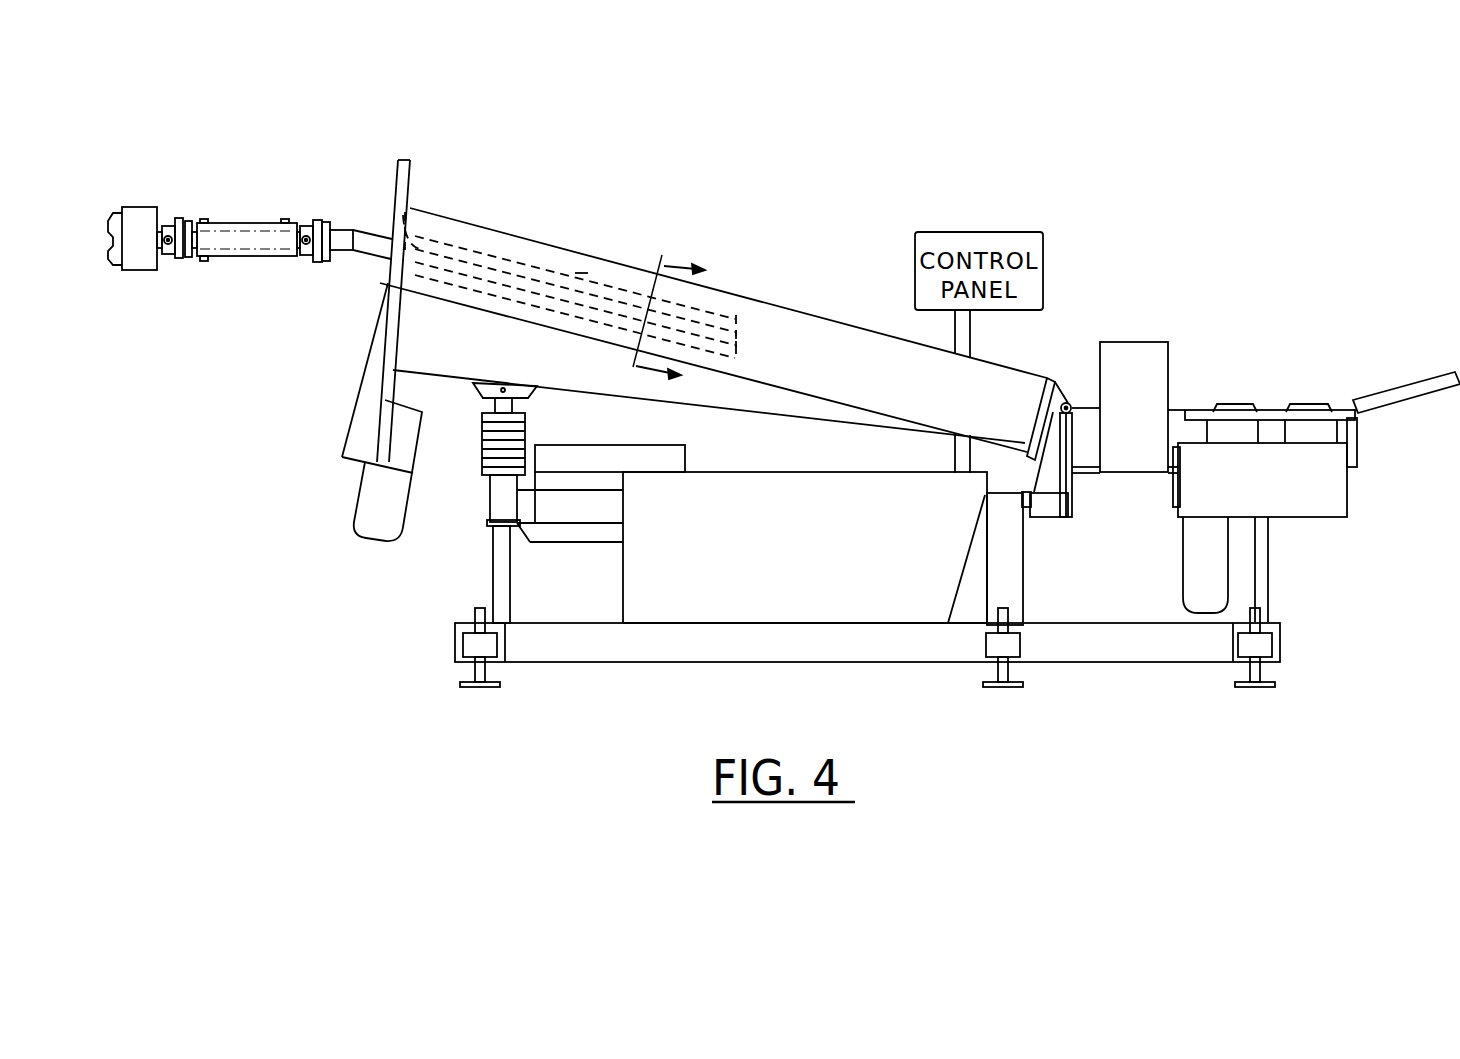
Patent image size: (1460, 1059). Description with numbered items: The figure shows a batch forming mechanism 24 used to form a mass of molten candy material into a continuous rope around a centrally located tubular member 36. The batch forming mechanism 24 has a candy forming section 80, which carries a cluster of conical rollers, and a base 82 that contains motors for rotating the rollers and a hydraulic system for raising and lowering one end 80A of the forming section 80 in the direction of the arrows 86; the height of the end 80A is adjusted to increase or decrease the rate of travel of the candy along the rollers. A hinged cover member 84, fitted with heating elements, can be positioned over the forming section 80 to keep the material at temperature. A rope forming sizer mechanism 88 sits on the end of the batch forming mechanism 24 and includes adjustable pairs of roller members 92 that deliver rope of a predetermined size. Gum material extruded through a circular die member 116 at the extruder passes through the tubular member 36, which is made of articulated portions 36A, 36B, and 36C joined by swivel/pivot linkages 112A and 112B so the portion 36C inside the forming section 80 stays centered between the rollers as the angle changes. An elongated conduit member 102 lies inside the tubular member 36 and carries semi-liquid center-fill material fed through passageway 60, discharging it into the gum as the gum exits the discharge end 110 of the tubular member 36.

The batch forming mechanism 24 is at (322, 562).
The tubular member 36 is at (237, 256).
The initial tubular section 36A is at (165, 268).
The portion of the tubular member 36B is at (238, 233).
The portion of the tubular member 36C is at (582, 270).
The passageway 60 is at (410, 177).
The candy forming section 80 is at (1017, 381).
The end of the forming section 80A is at (357, 416).
The base 82 is at (707, 610).
The hinged cover member 84 is at (808, 318).
The arrows 86 is at (462, 424).
The rope forming sizer mechanism 88 is at (1282, 371).
The roller members 92 is at (1229, 407).
The conduit member 102 is at (569, 275).
The discharge end 110 is at (740, 336).
The swivel/pivot linkage 112A is at (182, 218).
The swivel/pivot linkage 112B is at (323, 222).
The circular die member 116 is at (160, 211).